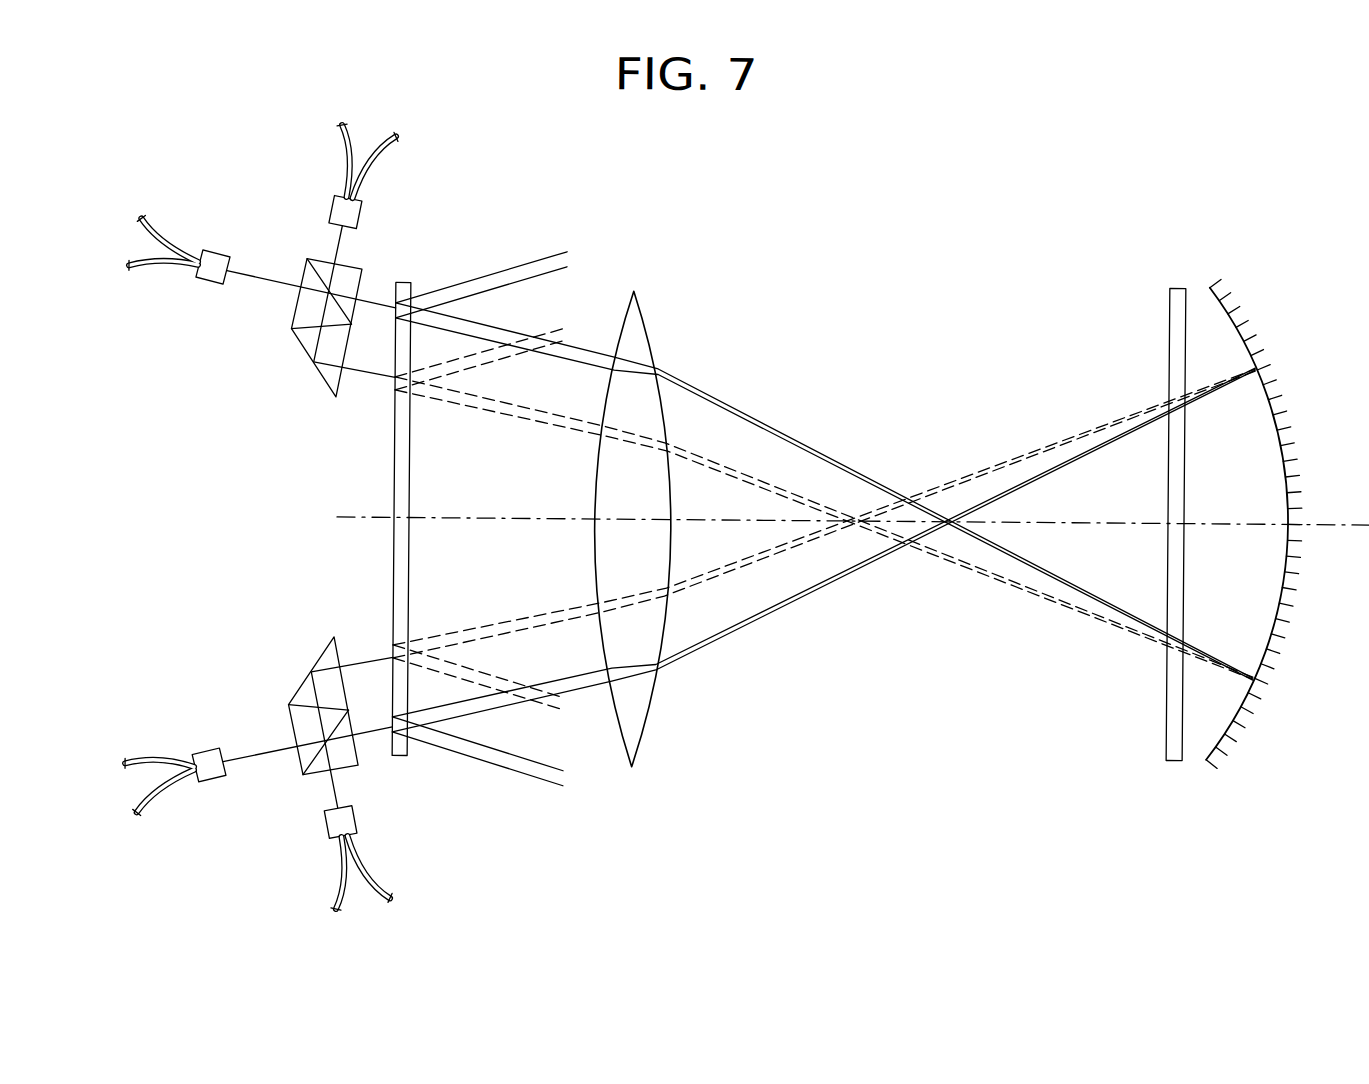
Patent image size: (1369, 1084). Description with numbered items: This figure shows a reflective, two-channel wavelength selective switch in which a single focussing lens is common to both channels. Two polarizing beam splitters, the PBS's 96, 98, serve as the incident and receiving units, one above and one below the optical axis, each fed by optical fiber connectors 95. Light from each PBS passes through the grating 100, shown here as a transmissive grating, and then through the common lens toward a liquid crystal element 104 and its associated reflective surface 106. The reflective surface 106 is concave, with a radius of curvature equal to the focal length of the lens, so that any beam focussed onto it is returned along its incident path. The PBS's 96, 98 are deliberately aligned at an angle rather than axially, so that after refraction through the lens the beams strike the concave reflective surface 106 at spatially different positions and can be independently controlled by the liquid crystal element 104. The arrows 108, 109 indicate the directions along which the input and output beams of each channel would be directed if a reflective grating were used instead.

The optical fiber connector 95 is at (218, 258).
The polarizing beam splitter 96 is at (290, 709).
The polarizing beam splitter 98 is at (290, 333).
The grating 100 is at (400, 760).
The liquid crystal element 104 is at (1168, 745).
The reflective surface 106 is at (1232, 733).
The arrow 108 is at (545, 290).
The arrow 109 is at (582, 767).